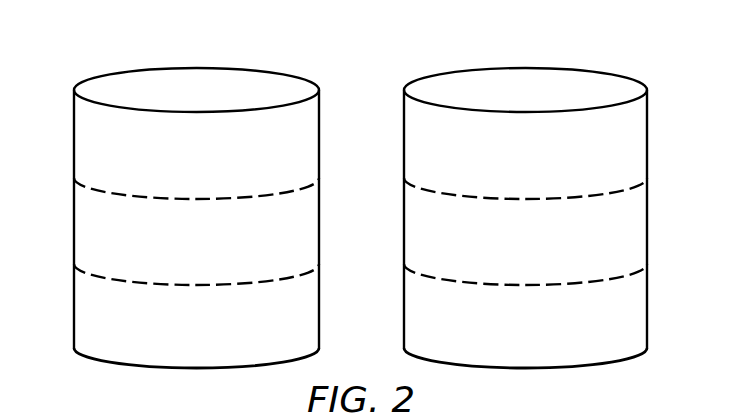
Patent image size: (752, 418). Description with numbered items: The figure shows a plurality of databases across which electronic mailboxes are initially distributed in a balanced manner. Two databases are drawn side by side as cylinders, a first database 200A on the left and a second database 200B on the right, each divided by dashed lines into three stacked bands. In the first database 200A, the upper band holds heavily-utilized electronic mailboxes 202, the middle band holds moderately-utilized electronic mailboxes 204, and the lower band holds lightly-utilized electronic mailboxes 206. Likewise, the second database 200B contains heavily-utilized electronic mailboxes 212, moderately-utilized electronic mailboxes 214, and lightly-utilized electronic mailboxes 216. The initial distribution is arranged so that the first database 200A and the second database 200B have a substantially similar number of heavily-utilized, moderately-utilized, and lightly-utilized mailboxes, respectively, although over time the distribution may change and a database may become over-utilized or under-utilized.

The first database 200A is at (122, 58).
The heavily-utilized electronic mailboxes 202 is at (78, 133).
The moderately-utilized electronic mailboxes 204 is at (78, 218).
The lightly-utilized electronic mailboxes 206 is at (78, 303).
The second database 200B is at (597, 58).
The heavily-utilized electronic mailboxes 212 is at (647, 130).
The moderately-utilized electronic mailboxes 214 is at (647, 218).
The lightly-utilized electronic mailboxes 216 is at (647, 305).